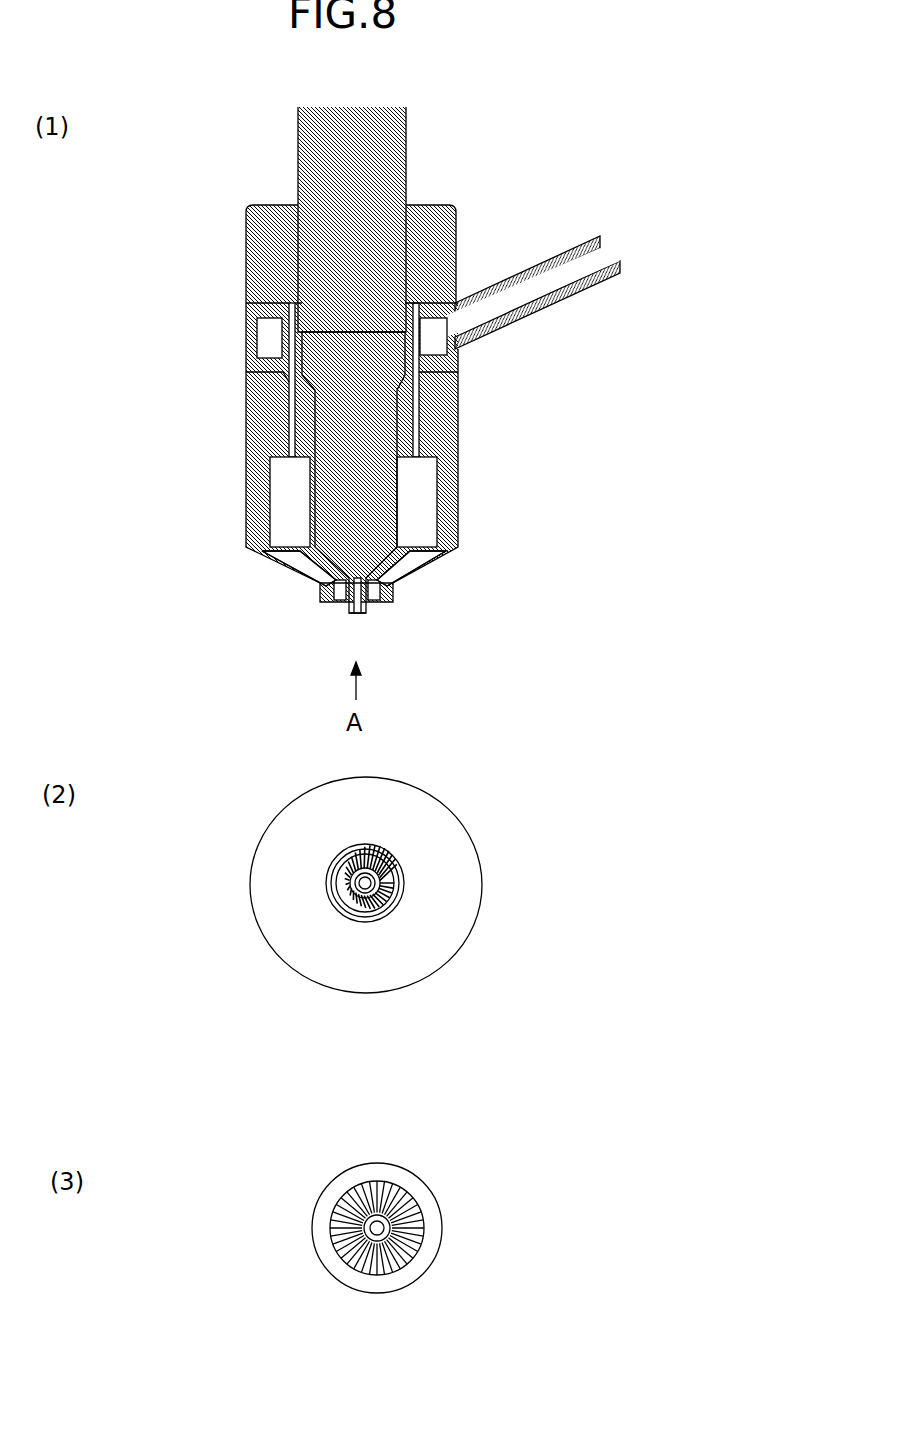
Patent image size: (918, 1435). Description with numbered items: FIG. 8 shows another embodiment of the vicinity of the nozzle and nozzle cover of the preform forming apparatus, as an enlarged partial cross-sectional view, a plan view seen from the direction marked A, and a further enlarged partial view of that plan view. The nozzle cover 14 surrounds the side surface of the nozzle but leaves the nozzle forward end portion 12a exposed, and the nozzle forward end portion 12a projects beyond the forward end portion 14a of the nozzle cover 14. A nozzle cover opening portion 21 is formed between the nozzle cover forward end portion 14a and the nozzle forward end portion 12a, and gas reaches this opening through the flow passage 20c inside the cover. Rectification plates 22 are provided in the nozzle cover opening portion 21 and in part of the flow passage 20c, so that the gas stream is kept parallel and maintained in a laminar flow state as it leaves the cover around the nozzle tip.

The nozzle cover 14 is at (463, 437).
The forward end portion of the nozzle cover 14a is at (390, 594).
The flow passage 20c is at (425, 508).
The rectification plates 22 is at (312, 573).
The nozzle forward end portion 12a is at (350, 615).
The nozzle cover opening portion 21 is at (368, 605).